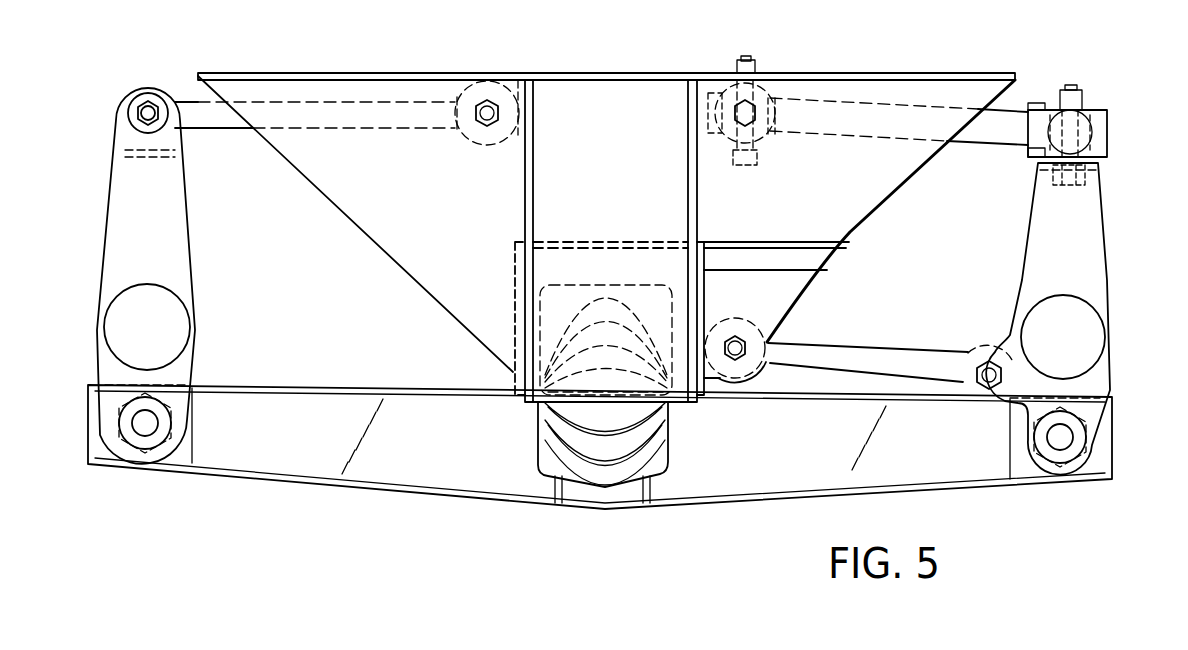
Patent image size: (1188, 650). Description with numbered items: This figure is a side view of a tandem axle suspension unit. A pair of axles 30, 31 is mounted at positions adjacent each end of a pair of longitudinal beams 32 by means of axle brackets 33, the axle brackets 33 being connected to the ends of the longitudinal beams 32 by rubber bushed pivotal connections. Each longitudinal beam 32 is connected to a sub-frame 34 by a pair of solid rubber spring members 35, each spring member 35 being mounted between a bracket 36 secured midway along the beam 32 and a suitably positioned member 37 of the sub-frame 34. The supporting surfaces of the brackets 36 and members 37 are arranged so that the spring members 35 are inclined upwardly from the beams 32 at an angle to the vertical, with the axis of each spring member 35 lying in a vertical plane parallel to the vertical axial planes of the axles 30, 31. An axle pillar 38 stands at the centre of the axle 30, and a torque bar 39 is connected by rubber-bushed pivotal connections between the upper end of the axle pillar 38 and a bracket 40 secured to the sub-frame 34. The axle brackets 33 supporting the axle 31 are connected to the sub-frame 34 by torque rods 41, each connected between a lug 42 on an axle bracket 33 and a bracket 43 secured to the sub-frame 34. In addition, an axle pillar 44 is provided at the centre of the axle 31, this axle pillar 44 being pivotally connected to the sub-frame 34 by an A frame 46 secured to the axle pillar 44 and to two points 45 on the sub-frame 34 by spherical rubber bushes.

The axle 30 is at (175, 320).
The axle 31 is at (1088, 333).
The longitudinal beam 32 is at (928, 452).
The axle bracket 33 is at (177, 371).
The sub-frame 34 is at (642, 115).
The solid rubber spring member 35 is at (552, 437).
The bracket 36 is at (605, 495).
The member 37 is at (547, 273).
The axle pillar 38 is at (176, 244).
The torque bar 39 is at (230, 118).
The bracket 40 is at (522, 76).
The torque rod 41 is at (895, 355).
The lug 42 is at (989, 356).
The bracket 43 is at (788, 302).
The axle pillar 44 is at (1040, 226).
The points on the subframe 45 is at (765, 150).
The A frame 46 is at (1006, 130).